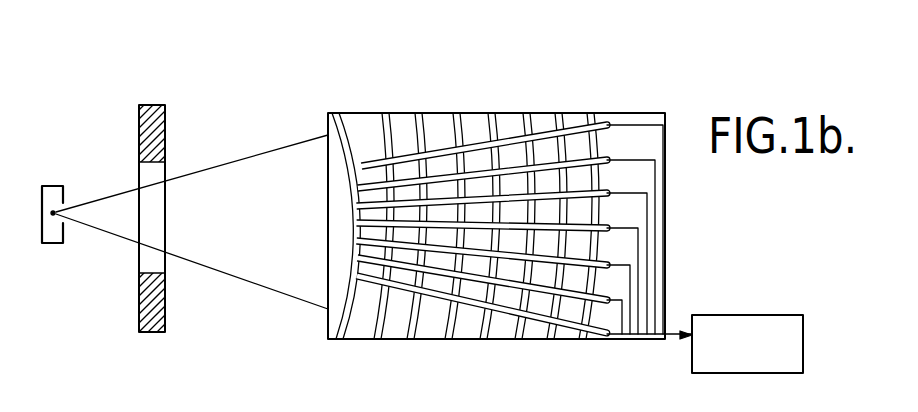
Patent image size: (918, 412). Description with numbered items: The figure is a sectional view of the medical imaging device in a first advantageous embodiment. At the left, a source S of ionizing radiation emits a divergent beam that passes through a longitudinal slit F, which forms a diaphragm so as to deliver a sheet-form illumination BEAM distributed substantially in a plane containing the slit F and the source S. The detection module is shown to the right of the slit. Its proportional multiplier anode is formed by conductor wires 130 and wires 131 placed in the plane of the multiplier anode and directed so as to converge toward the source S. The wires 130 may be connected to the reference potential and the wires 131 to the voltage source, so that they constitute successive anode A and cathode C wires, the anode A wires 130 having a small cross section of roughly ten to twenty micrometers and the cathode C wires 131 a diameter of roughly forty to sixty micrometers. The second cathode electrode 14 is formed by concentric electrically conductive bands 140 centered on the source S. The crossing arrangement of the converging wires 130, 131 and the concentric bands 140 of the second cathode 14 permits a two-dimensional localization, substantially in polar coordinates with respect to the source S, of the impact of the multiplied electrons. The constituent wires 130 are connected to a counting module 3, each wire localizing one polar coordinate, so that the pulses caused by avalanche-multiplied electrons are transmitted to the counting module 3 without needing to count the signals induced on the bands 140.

The second cathode electrode 14 is at (342, 132).
The conductive bands 140 is at (443, 132).
The conductor wires 130 is at (542, 132).
The cathode wires 131 is at (575, 130).
The counting module 3 is at (753, 328).
The source S is at (64, 203).
The longitudinal slit F is at (165, 172).
The sheet-form illumination beam BEAM is at (92, 232).
The anode A is at (600, 121).
The cathode C is at (603, 157).